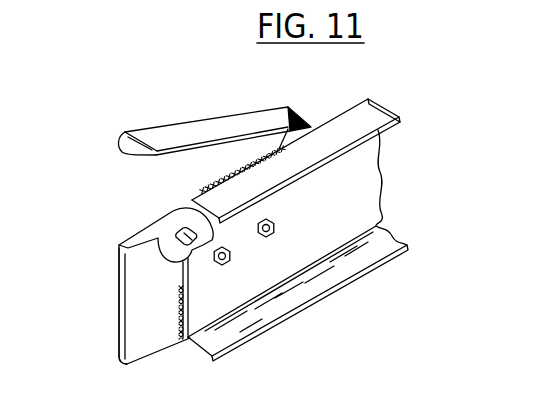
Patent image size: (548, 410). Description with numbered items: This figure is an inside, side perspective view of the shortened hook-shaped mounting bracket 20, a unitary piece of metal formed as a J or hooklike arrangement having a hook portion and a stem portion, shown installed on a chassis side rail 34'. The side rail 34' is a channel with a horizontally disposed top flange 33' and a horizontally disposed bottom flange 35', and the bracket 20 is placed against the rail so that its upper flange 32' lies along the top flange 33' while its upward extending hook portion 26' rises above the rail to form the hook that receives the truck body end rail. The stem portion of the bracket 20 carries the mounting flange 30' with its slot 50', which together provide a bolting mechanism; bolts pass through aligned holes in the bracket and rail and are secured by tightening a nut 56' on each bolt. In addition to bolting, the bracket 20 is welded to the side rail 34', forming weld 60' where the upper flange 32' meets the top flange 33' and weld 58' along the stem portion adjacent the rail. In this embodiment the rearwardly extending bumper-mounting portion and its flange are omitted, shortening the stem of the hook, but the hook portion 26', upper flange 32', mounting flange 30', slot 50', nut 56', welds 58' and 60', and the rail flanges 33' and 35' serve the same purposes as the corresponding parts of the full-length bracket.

The mounting bracket 20 is at (221, 102).
The upper flange 32' is at (182, 120).
The weld 60' is at (272, 139).
The top flange 33' is at (324, 154).
The side rail 34' is at (330, 230).
The bottom flange 35' is at (298, 293).
The upward extending hook portion 26' is at (135, 180).
The mounting flange 30' is at (132, 281).
The slot 50' is at (89, 306).
The nut 56' is at (250, 251).
The weld 58' is at (161, 348).